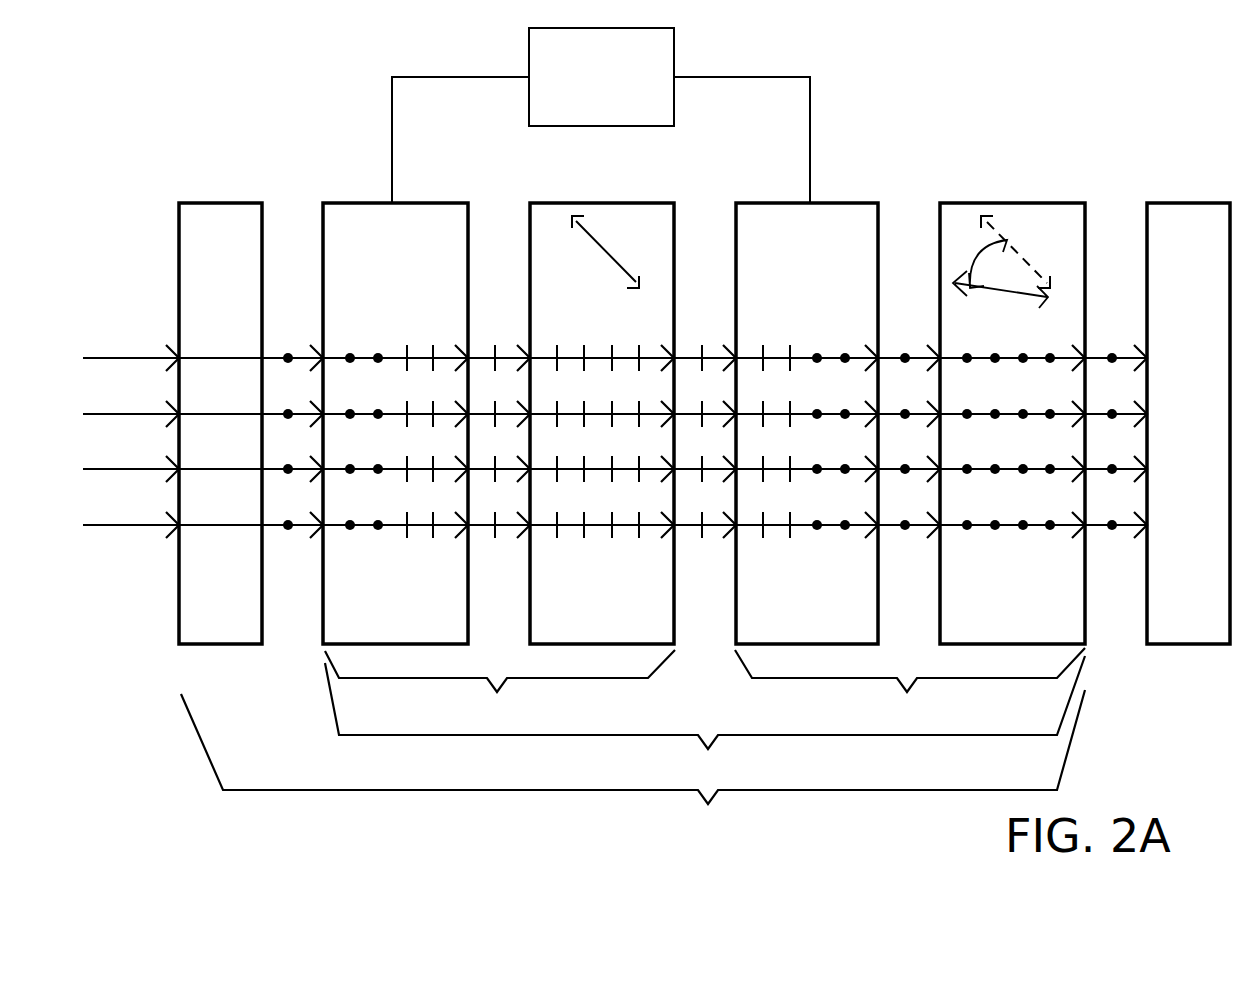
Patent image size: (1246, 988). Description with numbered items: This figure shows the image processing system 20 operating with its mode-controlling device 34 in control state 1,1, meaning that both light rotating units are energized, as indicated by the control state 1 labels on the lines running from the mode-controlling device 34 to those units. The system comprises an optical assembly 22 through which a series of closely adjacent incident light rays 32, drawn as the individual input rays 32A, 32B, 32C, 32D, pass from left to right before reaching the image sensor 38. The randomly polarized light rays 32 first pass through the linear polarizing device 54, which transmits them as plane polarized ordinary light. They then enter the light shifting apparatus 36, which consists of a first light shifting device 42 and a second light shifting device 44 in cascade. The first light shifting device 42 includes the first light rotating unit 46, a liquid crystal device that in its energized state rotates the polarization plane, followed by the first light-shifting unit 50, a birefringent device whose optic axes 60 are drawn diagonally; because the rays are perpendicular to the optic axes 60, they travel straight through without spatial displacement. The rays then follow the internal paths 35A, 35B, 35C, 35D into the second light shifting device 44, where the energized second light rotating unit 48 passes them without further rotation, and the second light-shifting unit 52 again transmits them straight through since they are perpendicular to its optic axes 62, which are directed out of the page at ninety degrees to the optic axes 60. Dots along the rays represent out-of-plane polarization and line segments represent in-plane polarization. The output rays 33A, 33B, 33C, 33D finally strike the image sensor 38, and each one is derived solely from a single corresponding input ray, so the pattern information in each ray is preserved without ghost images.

The control state 1 is at (603, 58).
The image processing system 20 is at (170, 775).
The optical assembly 22 is at (633, 764).
The light rays 32 is at (138, 548).
The input ray 32A is at (131, 352).
The input ray 32B is at (131, 408).
The input ray 32C is at (131, 463).
The input ray 32D is at (131, 519).
The output ray 33A is at (1109, 352).
The output ray 33B is at (1109, 408).
The output ray 33C is at (1109, 463).
The output ray 33D is at (1109, 519).
The mode-controlling device 34 is at (588, 91).
The internal path 35A is at (705, 352).
The internal path 35B is at (705, 408).
The internal path 35C is at (705, 463).
The internal path 35D is at (705, 519).
The light shifting apparatus 36 is at (705, 719).
The image sensor 38 is at (1174, 600).
The first light shifting device 42 is at (500, 687).
The second light shifting device 44 is at (910, 686).
The first light rotating unit 46 is at (378, 600).
The second light rotating unit 48 is at (792, 600).
The first light-shifting unit 50 is at (587, 600).
The second light-shifting unit 52 is at (996, 600).
The linear polarizing device 54 is at (206, 600).
The optic axes 60 is at (811, 252).
The optic axes 62 is at (1000, 277).